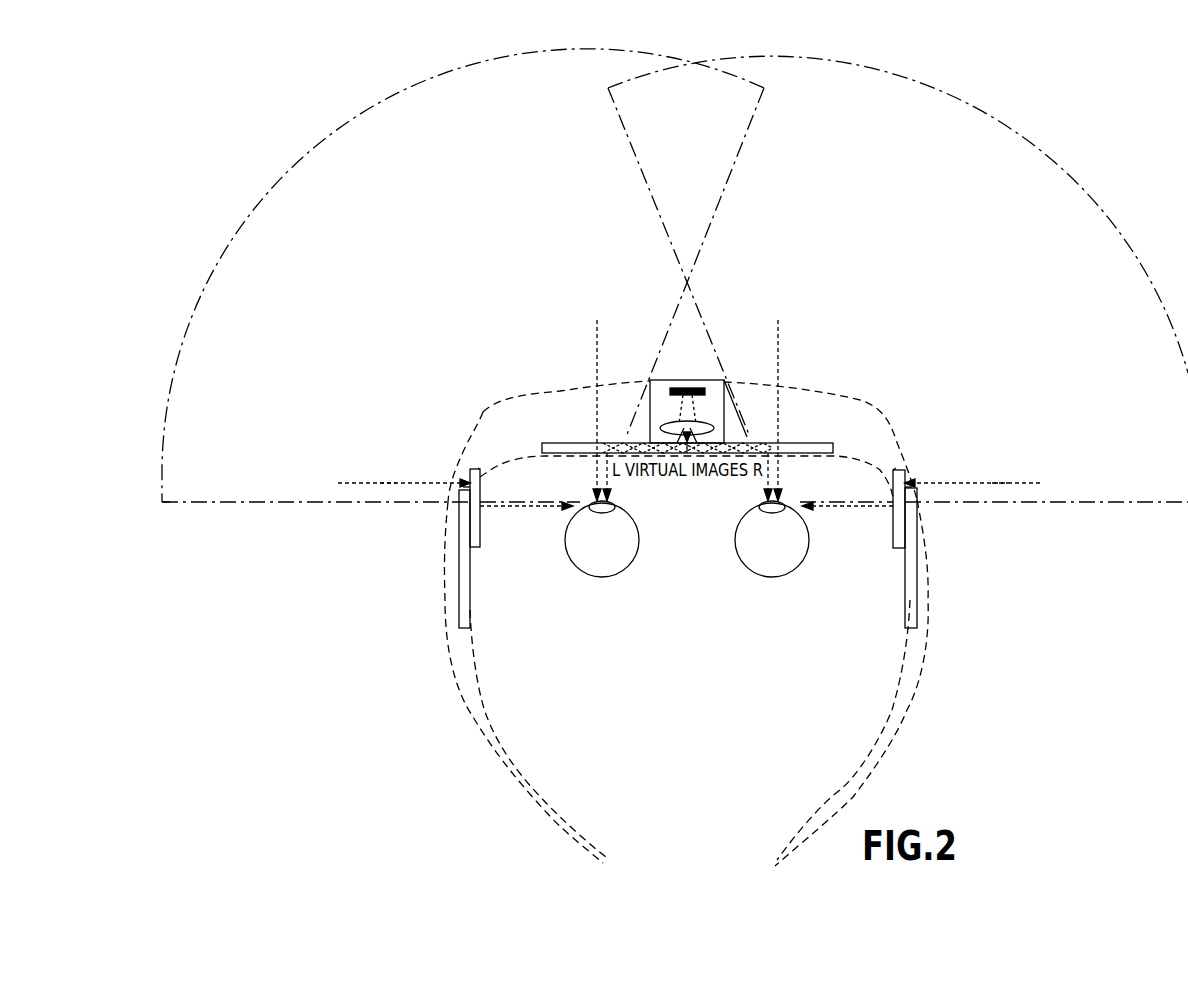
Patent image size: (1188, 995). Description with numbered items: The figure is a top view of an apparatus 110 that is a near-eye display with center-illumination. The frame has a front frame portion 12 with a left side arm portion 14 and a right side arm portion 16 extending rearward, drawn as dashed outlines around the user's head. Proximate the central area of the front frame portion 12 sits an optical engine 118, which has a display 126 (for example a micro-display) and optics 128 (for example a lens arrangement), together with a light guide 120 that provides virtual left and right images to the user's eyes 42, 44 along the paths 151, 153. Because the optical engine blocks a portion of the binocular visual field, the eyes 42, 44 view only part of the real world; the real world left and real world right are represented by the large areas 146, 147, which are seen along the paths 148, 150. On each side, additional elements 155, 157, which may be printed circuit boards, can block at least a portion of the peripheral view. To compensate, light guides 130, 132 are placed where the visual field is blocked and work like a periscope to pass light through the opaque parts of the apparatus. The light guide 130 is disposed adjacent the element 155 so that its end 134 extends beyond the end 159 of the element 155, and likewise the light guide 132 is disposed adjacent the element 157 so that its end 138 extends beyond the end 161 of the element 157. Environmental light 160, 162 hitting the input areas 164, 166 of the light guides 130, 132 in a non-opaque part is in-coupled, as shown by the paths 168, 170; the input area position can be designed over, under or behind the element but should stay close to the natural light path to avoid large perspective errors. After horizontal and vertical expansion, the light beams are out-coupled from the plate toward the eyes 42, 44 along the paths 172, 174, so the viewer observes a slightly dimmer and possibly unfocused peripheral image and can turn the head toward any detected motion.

The front frame portion 12 is at (510, 460).
The left side arm portion 14 is at (480, 703).
The right side arm portion 16 is at (897, 698).
The user's eye 42 is at (604, 577).
The user's eye 44 is at (774, 577).
The apparatus 110 is at (250, 825).
The optical engine 118 is at (708, 378).
The light guide 120 is at (828, 443).
The display 126 is at (688, 388).
The optics 128 is at (663, 427).
The light guide 130 is at (482, 537).
The light guide 132 is at (893, 537).
The end of the light guide 134 is at (478, 468).
The end of the light guide 138 is at (896, 468).
The real world left area 146 is at (348, 140).
The real world right area 147 is at (1050, 170).
The path 148 is at (597, 365).
The path 150 is at (778, 372).
The path 151 is at (608, 483).
The path 153 is at (767, 483).
The element 155 is at (468, 615).
The element 157 is at (905, 615).
The end of the element 159 is at (468, 487).
The environmental light 160 is at (385, 483).
The end of the element 161 is at (912, 486).
The environmental light 162 is at (994, 483).
The input area 164 is at (466, 479).
The input area 166 is at (912, 470).
The path 168 is at (388, 485).
The path 170 is at (1000, 485).
The path 172 is at (538, 508).
The path 174 is at (840, 508).